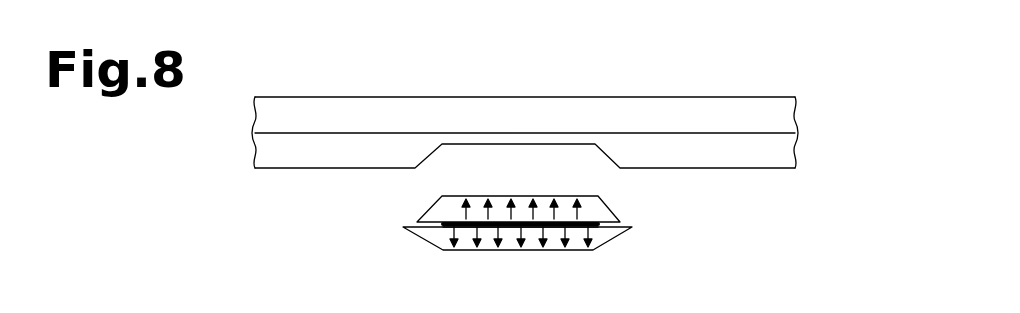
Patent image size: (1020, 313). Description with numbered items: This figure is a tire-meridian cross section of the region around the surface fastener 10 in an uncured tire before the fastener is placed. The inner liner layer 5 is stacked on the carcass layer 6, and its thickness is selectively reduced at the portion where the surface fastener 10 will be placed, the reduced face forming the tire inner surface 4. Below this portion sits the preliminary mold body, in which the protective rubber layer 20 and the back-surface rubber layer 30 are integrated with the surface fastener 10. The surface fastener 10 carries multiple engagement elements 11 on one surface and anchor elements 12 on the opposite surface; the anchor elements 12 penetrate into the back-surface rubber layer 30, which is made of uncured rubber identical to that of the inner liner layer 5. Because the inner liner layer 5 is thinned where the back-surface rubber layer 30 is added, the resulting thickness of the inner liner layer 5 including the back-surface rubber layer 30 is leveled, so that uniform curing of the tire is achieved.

The tire inner surface 4 is at (275, 170).
The inner liner layer 5 is at (797, 150).
The carcass layer 6 is at (798, 118).
The surface fastener 10 is at (606, 214).
The engagement element 11 is at (457, 228).
The anchor element 12 is at (480, 218).
The protective rubber layer 20 is at (607, 232).
The back-surface rubber layer 30 is at (440, 210).